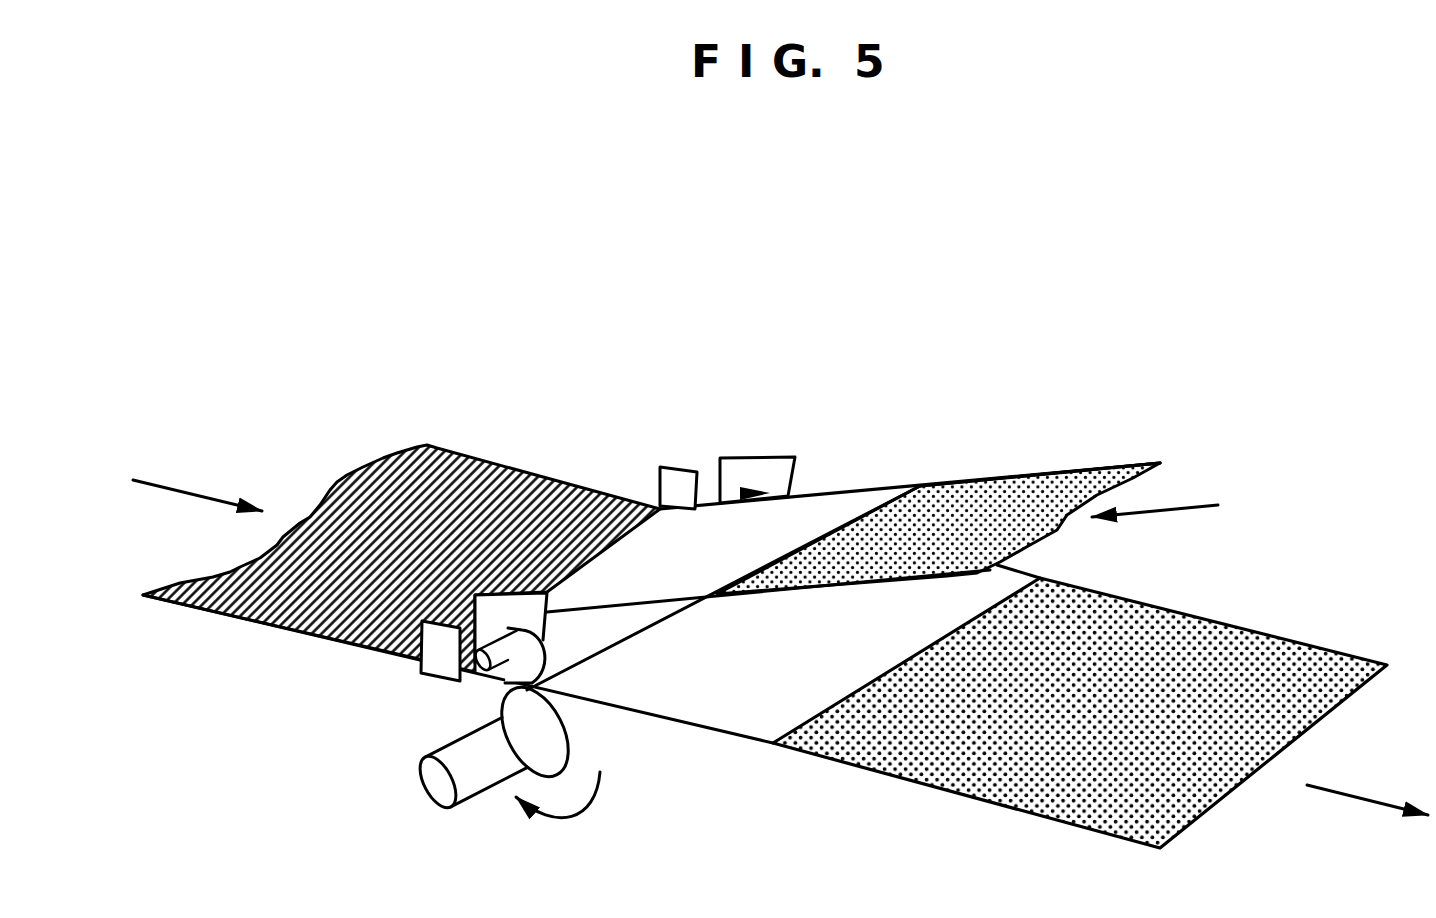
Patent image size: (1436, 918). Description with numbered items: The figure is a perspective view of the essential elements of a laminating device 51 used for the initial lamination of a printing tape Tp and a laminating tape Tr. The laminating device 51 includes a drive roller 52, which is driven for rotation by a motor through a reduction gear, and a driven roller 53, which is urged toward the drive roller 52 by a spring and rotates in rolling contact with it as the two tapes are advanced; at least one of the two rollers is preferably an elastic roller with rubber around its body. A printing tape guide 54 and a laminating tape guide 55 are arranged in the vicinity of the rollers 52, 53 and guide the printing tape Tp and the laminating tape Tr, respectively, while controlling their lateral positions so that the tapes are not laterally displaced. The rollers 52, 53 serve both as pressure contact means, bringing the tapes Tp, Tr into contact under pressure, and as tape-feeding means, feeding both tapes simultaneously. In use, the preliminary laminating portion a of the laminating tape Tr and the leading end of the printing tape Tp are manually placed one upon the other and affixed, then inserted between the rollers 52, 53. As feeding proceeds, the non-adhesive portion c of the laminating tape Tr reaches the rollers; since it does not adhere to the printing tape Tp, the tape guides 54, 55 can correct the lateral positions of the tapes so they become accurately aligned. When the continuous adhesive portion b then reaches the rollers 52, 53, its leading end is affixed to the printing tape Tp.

The laminating device 51 is at (886, 392).
The drive roller 52 is at (605, 733).
The driven roller 53 is at (613, 627).
The printing tape guide 54 is at (680, 478).
The laminating tape guide 55 is at (763, 466).
The printing tape Tp is at (523, 466).
The laminating tape Tr is at (968, 476).
The preliminary laminating portion a is at (1250, 640).
The continuous adhesive portion b is at (1040, 476).
The non-adhesive portion c is at (747, 688).